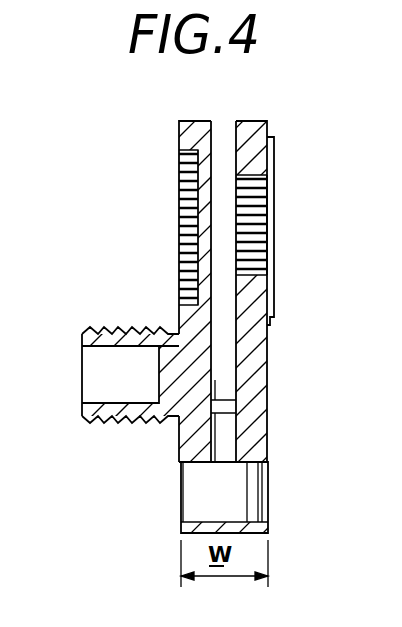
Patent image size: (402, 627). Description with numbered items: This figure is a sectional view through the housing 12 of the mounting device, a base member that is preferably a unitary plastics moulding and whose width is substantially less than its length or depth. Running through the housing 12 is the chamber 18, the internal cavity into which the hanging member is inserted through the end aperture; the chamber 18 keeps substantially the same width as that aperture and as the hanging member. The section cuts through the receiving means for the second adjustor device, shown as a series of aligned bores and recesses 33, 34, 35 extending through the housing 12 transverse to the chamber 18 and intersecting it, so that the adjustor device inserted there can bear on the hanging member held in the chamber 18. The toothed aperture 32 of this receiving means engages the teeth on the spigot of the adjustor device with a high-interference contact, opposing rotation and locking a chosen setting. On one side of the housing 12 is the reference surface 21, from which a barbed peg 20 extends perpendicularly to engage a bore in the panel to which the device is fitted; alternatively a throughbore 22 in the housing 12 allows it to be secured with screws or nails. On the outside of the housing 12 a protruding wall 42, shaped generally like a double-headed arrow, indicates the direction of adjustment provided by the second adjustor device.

The housing 12 is at (250, 372).
The chamber 18 is at (223, 177).
The peg 20 is at (100, 360).
The reference surface 21 is at (178, 131).
The throughbore 22 is at (265, 488).
The aperture 32 is at (272, 198).
The bore 33 is at (199, 242).
The bore 34 is at (270, 236).
The recess 35 is at (186, 226).
The protruding wall 42 is at (274, 322).